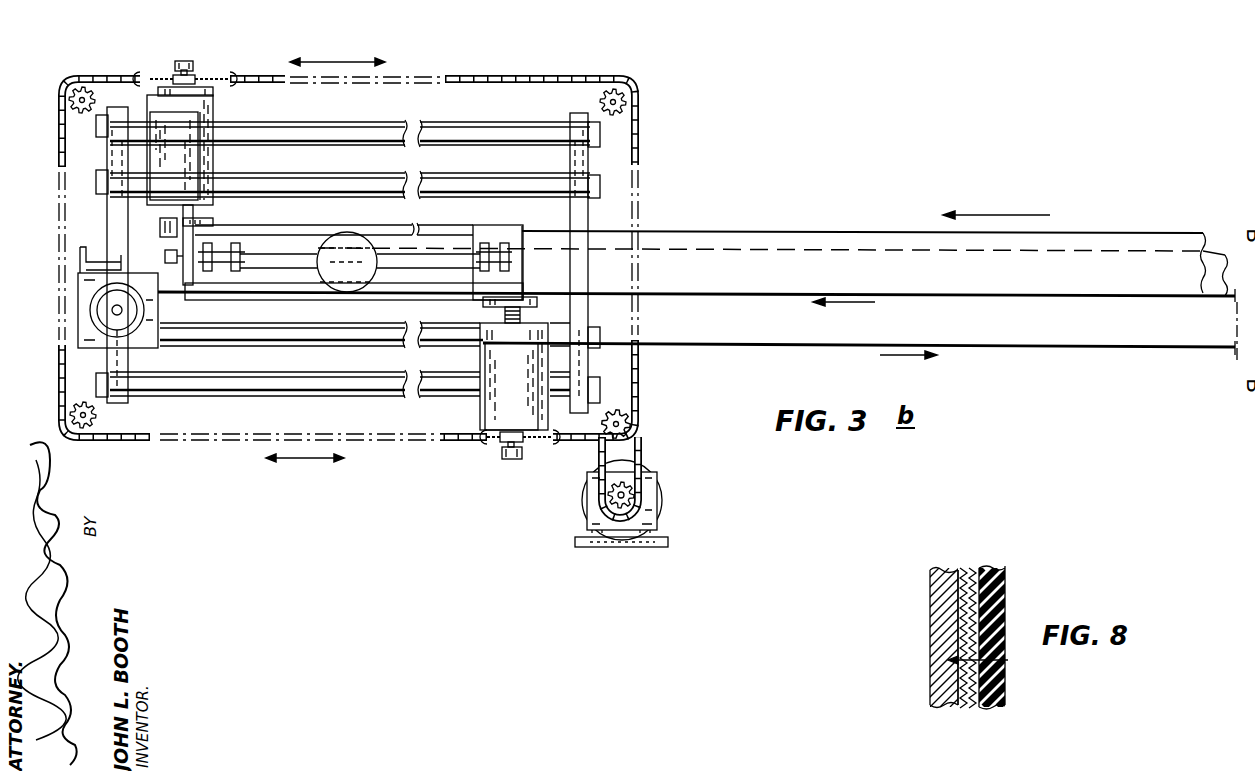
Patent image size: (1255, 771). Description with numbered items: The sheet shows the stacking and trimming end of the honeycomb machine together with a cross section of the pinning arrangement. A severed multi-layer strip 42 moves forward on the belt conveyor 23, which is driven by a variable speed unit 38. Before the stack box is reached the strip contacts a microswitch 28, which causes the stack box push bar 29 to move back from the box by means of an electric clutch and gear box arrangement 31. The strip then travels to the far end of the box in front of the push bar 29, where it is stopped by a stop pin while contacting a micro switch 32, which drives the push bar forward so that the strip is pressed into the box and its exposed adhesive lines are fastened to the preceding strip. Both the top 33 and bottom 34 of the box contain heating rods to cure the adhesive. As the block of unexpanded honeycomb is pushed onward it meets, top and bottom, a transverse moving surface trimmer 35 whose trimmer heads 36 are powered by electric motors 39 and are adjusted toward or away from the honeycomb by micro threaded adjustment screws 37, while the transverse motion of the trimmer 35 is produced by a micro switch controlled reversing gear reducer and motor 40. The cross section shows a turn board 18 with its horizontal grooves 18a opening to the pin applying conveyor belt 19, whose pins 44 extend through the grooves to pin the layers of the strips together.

In FIG. 8, the turn board 18 is at (930, 613).
In FIG. 8, the horizontal grooves 18a is at (930, 670).
In FIG. 8, the pin applying conveyor belt 19 is at (1005, 583).
In FIG. 3B, the belt conveyor 23 is at (1020, 294).
In FIG. 3B, the microswitch 28 is at (660, 262).
In FIG. 3B, the stack box push bar 29 is at (436, 250).
In FIG. 3B, the electric clutch and gear box arrangement 31 is at (332, 290).
In FIG. 3B, the micro switch 32 is at (165, 253).
In FIG. 3B, the top of the stack box 33 is at (297, 230).
In FIG. 3B, the bottom of the stack box 34 is at (215, 298).
In FIG. 3B, the transverse moving surface trimmer 35 is at (485, 122).
In FIG. 3B, the trimmer heads 36 is at (215, 223).
In FIG. 3B, the micro threaded adjustment screws 37 is at (182, 61).
In FIG. 3B, the variable speed unit 38 is at (78, 312).
In FIG. 3B, the electric motors 39 is at (213, 111).
In FIG. 3B, the reversing gear reducer and motor 40 is at (657, 498).
In FIG. 3B, the multi-layer strip 42 is at (1214, 262).
In FIG. 8, the pins 44 is at (1008, 660).